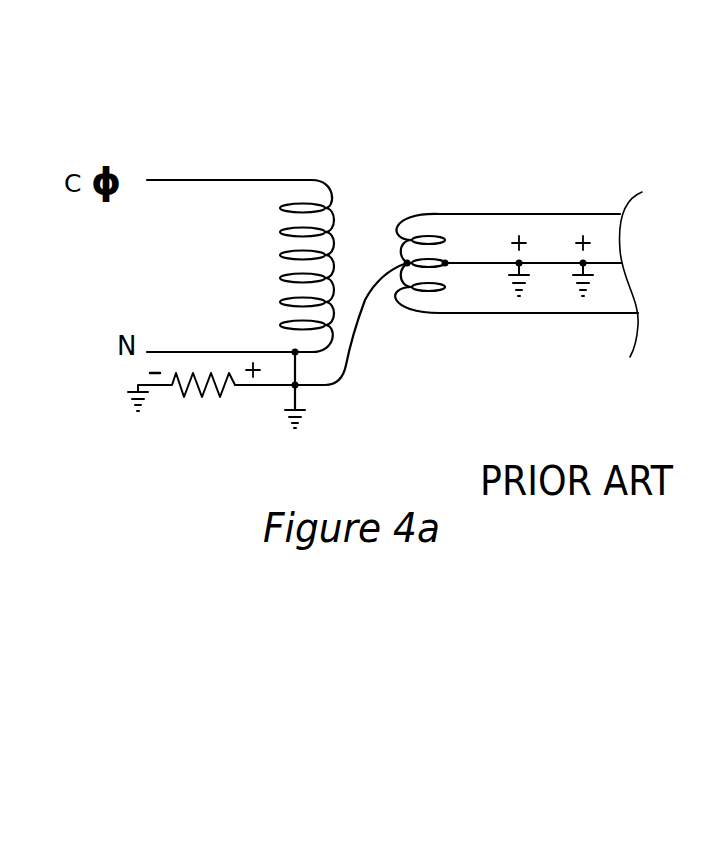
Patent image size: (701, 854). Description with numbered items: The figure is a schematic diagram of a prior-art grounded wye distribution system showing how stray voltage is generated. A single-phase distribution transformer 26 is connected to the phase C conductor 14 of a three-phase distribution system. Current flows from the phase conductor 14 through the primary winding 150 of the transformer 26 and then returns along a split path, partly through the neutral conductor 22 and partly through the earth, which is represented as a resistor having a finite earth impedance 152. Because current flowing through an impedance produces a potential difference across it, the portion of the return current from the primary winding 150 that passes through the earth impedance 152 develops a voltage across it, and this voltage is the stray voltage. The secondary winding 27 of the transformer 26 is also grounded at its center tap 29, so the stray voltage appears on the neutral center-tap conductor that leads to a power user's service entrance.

The phase C conductor 14 is at (170, 178).
The neutral conductor 22 is at (182, 349).
The distribution transformer 26 is at (343, 128).
The primary winding 150 is at (328, 213).
The secondary winding 27 is at (443, 237).
The center tap 29 is at (447, 266).
The earth impedance 152 is at (208, 397).